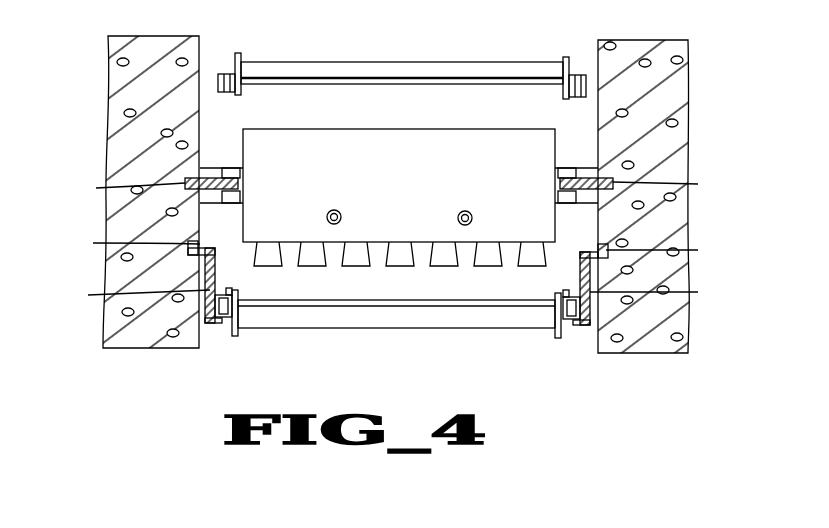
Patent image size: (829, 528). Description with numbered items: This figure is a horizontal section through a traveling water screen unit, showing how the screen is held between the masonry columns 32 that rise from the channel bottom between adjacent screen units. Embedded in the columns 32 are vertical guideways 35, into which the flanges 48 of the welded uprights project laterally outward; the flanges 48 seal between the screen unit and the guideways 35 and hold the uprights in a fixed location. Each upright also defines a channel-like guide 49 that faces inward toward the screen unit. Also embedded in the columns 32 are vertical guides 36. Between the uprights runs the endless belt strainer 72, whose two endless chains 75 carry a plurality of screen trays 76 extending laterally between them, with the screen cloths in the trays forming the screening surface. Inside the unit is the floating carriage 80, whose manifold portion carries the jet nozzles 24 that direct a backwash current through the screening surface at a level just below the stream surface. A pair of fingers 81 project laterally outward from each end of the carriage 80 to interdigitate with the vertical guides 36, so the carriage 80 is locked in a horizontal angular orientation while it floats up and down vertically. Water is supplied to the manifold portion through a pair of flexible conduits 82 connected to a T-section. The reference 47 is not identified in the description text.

The jet nozzles 24 is at (283, 266).
The columns 32 is at (108, 93).
The guideways 35 is at (394, 247).
The vertical guides 36 is at (394, 187).
The mounting flange 47 is at (394, 294).
The flanges 48 is at (200, 248).
The channel-like guide 49 is at (212, 323).
The endless belt strainer 72 is at (414, 331).
The endless chains 75 is at (222, 92).
The screen trays 76 is at (369, 62).
The floating carriage 80 is at (414, 156).
The fingers 81 is at (240, 198).
The flexible conduits 82 is at (458, 217).